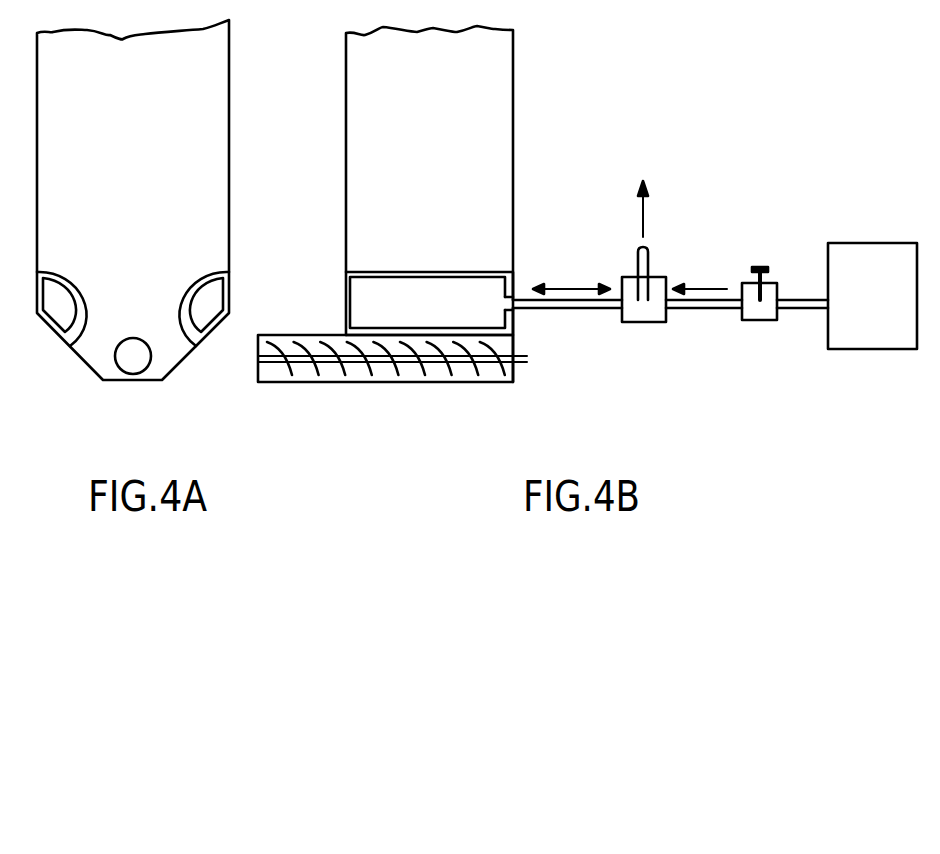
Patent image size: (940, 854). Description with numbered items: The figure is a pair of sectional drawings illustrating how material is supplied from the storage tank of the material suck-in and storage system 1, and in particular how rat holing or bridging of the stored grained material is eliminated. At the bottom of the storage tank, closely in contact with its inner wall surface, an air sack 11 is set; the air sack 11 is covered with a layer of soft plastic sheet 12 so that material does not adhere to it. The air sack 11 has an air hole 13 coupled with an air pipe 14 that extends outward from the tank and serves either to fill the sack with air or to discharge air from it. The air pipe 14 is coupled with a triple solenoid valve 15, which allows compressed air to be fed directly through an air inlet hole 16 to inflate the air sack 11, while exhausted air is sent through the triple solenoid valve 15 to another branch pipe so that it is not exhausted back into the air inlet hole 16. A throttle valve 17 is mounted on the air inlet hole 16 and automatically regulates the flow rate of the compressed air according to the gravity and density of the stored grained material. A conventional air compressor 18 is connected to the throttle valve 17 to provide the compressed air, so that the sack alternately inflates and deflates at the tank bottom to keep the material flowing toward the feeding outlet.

In FIG. 4A, the material suck-in and storage system 1 is at (229, 115).
In FIG. 4B, the material suck-in and storage system 1 is at (513, 160).
In FIG. 4A, the air sack 11 is at (208, 297).
In FIG. 4B, the air sack 11 is at (365, 308).
In FIG. 4A, the soft plastic sheet 12 is at (214, 272).
In FIG. 4B, the soft plastic sheet 12 is at (370, 270).
In FIG. 4B, the air hole 13 is at (514, 309).
In FIG. 4B, the air pipe 14 is at (585, 303).
In FIG. 4B, the triple solenoid valve 15 is at (643, 305).
In FIG. 4B, the air inlet hole 16 is at (710, 303).
In FIG. 4B, the throttle valve 17 is at (763, 317).
In FIG. 4B, the air compressor 18 is at (885, 312).